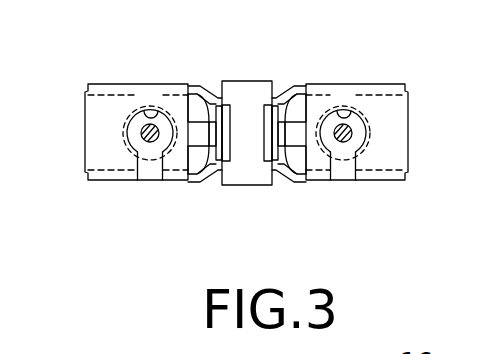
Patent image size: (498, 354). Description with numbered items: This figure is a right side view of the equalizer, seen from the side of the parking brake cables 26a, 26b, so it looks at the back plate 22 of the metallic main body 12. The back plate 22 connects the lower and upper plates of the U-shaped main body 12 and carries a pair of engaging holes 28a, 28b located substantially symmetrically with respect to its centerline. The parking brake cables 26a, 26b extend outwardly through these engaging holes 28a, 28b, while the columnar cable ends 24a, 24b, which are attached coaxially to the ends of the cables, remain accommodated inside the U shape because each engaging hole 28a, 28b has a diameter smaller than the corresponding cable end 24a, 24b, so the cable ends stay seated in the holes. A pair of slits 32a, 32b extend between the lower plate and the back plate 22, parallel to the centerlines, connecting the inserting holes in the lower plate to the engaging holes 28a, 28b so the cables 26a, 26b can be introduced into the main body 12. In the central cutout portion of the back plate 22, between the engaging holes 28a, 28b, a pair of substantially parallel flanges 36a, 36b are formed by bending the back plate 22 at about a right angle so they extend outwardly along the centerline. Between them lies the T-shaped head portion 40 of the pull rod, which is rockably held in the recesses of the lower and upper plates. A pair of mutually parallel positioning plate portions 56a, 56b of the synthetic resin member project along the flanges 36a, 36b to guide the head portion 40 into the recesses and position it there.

The main body 12 is at (405, 57).
The back plate 22 is at (103, 102).
The cable end 24a is at (136, 143).
The cable end 24b is at (357, 142).
The parking brake cable 26a is at (141, 133).
The parking brake cable 26b is at (352, 133).
The engaging hole 28a is at (145, 108).
The engaging hole 28b is at (341, 108).
The slit 32a is at (147, 180).
The slit 32b is at (345, 182).
The flange 36a is at (198, 150).
The flange 36b is at (299, 112).
The head portion 40 is at (245, 90).
The positioning plate portion 56a is at (199, 112).
The positioning plate portion 56b is at (263, 150).